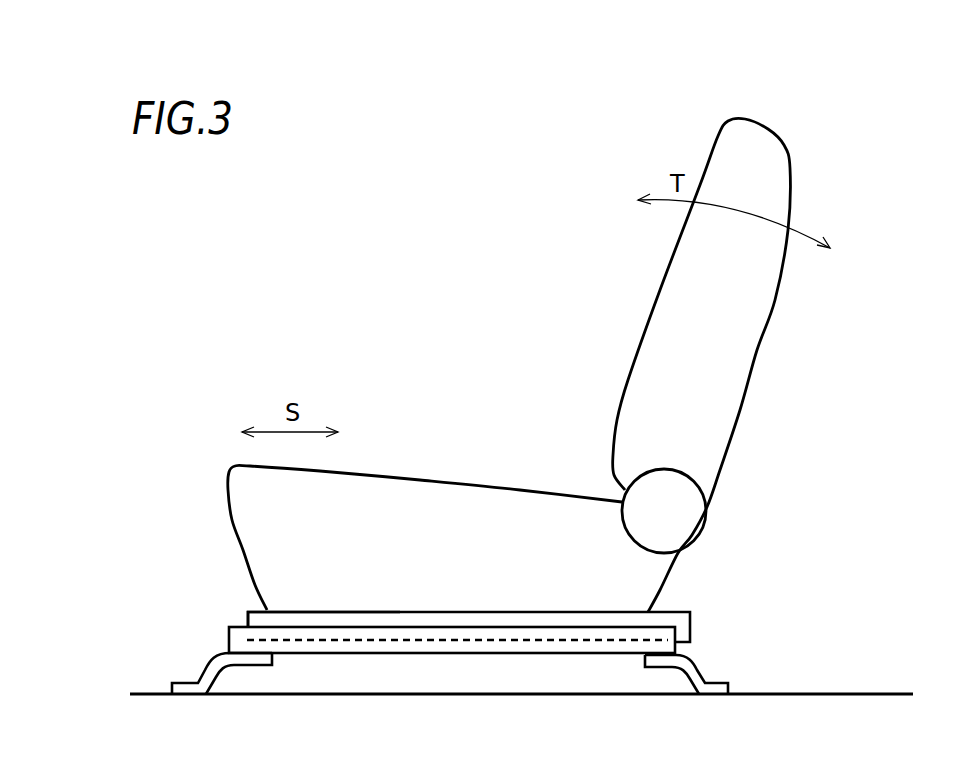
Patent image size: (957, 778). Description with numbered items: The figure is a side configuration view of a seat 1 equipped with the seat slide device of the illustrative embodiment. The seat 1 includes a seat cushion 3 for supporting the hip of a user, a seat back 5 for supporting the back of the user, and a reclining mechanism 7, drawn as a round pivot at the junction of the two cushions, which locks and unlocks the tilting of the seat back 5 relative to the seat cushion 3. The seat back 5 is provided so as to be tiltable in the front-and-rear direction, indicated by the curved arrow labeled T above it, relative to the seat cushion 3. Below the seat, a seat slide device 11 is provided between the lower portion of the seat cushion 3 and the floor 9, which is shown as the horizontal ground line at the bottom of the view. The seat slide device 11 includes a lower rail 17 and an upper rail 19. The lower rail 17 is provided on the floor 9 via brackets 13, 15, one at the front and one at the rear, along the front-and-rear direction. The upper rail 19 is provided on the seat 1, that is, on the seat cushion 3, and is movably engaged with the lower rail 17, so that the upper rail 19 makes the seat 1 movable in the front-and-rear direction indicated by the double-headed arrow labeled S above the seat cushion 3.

The seat 1 is at (818, 405).
The seat cushion 3 is at (647, 583).
The seat back 5 is at (723, 420).
The reclining mechanism 7 is at (690, 500).
The floor 9 is at (875, 694).
The seat slide device 11 is at (677, 637).
The bracket 13 is at (217, 680).
The bracket 15 is at (682, 670).
The lower rail 17 is at (237, 640).
The upper rail 19 is at (253, 612).